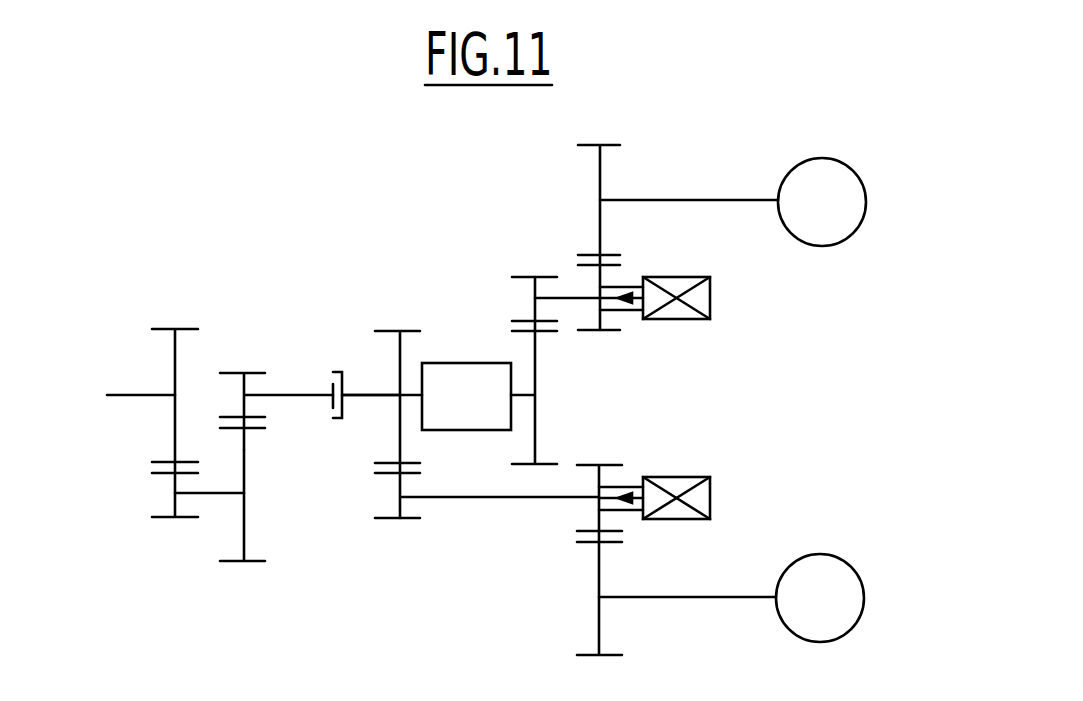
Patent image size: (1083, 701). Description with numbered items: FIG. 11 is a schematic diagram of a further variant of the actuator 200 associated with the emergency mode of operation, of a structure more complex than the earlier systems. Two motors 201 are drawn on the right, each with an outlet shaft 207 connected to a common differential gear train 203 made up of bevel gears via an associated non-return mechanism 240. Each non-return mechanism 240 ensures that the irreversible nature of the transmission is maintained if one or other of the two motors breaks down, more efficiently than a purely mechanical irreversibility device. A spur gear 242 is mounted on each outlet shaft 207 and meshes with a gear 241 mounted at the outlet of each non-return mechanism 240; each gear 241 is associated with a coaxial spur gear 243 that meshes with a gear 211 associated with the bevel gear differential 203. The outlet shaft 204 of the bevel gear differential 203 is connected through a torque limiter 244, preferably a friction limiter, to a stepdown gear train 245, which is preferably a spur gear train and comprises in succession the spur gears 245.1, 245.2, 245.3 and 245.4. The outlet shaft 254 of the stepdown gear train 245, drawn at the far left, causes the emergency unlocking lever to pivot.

The transmission 200 is at (326, 198).
The motor 201 is at (825, 188).
The common differential gear train 203 is at (463, 390).
The outlet shaft 204 is at (370, 400).
The outlet shaft 207 is at (710, 200).
The gear 211 is at (399, 355).
The non-return mechanism 240 is at (710, 296).
The gear 241 is at (605, 333).
The spur gear 242 is at (600, 182).
The coaxial spur gear 243 is at (537, 277).
The torque limiter 244 is at (323, 368).
The stepdown gear train 245 is at (226, 280).
The spur gear 245.1 is at (258, 372).
The spur gear 245.2 is at (255, 562).
The spur gear 245.3 is at (185, 520).
The spur gear 245.4 is at (170, 328).
The outlet shaft 254 is at (125, 397).